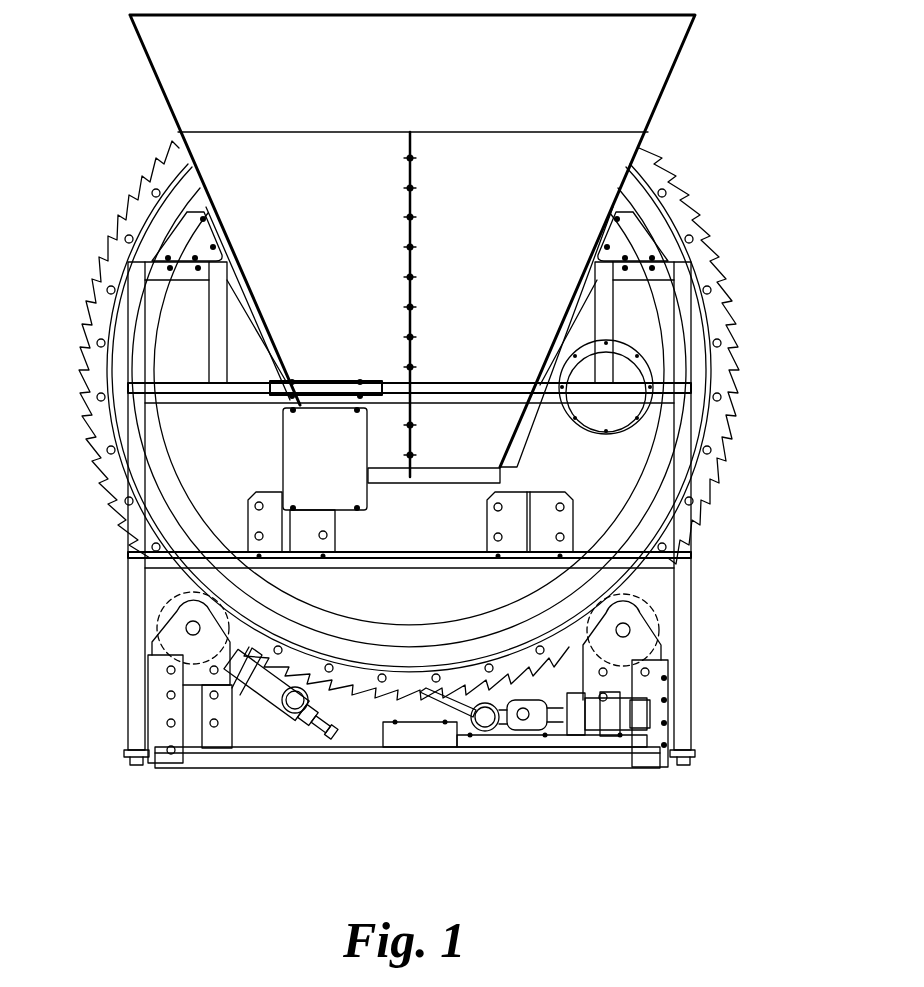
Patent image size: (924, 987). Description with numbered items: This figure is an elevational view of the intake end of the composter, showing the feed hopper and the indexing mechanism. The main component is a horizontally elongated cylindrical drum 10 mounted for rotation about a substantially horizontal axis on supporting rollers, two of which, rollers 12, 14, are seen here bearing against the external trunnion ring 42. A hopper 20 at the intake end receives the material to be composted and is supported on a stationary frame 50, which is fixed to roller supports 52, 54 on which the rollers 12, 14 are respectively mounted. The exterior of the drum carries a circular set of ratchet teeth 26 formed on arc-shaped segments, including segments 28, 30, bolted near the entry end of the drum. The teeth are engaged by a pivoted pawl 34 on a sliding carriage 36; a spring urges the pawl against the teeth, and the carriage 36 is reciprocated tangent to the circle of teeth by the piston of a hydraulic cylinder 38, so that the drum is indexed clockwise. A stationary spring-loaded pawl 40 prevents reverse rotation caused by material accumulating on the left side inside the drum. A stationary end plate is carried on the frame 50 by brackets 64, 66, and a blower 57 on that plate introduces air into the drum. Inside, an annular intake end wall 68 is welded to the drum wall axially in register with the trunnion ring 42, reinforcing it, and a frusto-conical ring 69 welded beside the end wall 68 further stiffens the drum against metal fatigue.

The cylindrical drum 10 is at (100, 432).
The roller 12 is at (172, 608).
The roller 14 is at (640, 622).
The hopper 20 is at (672, 75).
The ratchet teeth 26 is at (720, 250).
The arc-shaped segment 28 is at (735, 320).
The arc-shaped segment 30 is at (718, 432).
The pivoted pawl 34 is at (470, 715).
The sliding carriage 36 is at (470, 724).
The hydraulic cylinder 38 is at (603, 717).
The stationary spring-loaded pawl 40 is at (245, 702).
The trunnion ring 42 is at (665, 207).
The stationary frame 50 is at (685, 563).
The roller support 52 is at (150, 652).
The roller support 54 is at (640, 652).
The blower 57 is at (636, 380).
The bracket 64 is at (543, 513).
The bracket 66 is at (273, 515).
The annular intake end wall 68 is at (652, 498).
The frusto-conical ring 69 is at (645, 535).